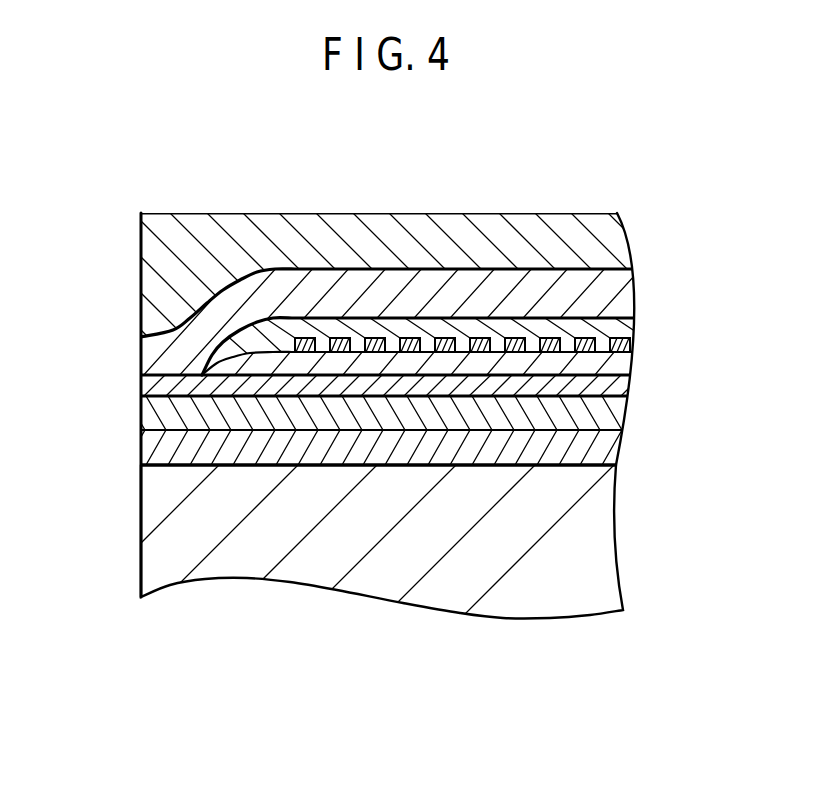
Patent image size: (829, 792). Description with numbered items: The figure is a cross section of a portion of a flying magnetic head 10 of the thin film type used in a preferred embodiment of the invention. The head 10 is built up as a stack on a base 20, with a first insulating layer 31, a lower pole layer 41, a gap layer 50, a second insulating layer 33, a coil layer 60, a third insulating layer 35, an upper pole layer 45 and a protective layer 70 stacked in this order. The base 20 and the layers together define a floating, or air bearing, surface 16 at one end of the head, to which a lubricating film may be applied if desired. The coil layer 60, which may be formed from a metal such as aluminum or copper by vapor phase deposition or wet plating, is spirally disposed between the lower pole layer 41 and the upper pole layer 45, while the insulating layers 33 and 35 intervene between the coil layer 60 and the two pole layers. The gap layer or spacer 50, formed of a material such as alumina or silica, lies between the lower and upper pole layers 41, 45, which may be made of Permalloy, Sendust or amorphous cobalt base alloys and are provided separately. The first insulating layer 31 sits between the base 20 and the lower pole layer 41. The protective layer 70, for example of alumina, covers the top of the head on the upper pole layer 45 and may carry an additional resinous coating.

The flying magnetic head 10 is at (376, 419).
The floating surface 16 is at (140, 280).
The base 20 is at (507, 598).
The first insulating layer 31 is at (614, 448).
The second insulating layer 33 is at (620, 368).
The third insulating layer 35 is at (620, 327).
The lower pole layer 41 is at (618, 412).
The upper pole layer 45 is at (622, 296).
The gap layer 50 is at (147, 385).
The coil layer 60 is at (292, 336).
The protective layer 70 is at (566, 228).